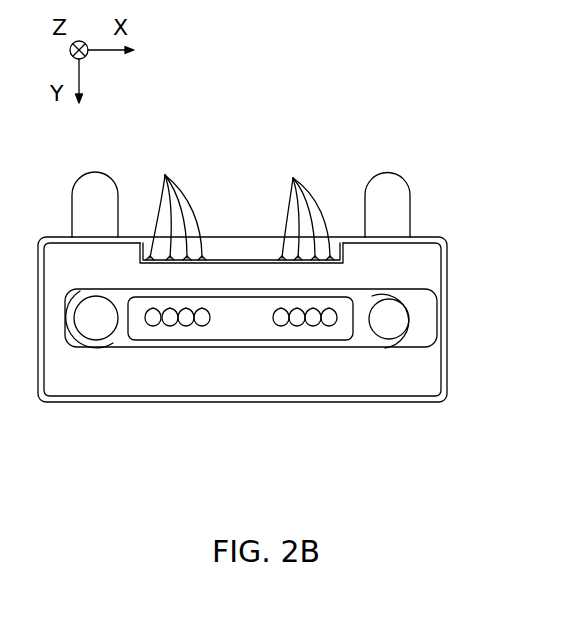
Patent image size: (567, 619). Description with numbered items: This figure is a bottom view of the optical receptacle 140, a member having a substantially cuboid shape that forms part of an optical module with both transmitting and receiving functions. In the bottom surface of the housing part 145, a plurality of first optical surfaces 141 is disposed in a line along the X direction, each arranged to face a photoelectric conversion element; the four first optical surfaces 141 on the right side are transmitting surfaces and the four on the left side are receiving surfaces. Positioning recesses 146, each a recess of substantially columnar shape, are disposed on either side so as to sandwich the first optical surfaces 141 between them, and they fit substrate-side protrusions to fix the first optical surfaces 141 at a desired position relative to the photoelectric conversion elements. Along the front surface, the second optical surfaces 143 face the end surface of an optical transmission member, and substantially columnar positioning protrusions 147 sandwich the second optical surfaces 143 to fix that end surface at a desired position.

The optical receptacle 140 is at (409, 104).
The first optical surface 141 is at (202, 326).
The second optical surface 143 is at (165, 175).
The housing part 145 is at (347, 303).
The positioning recess 146 is at (96, 328).
The positioning protrusion 147 is at (97, 203).